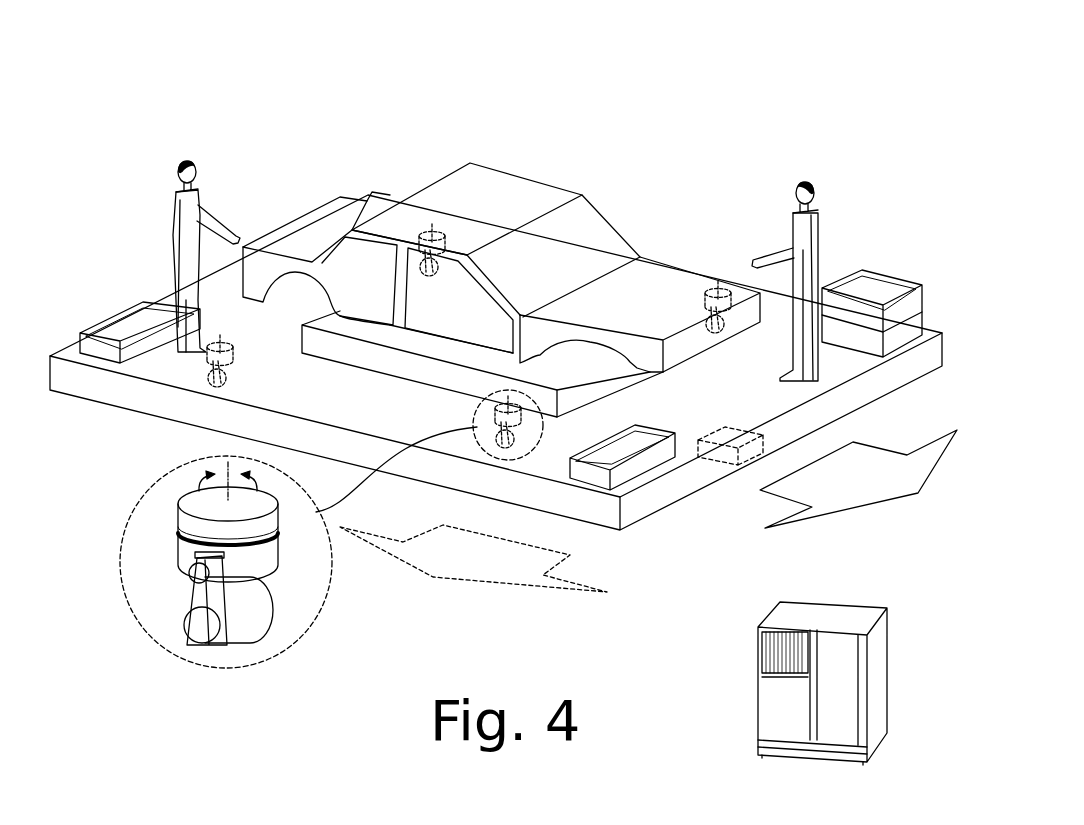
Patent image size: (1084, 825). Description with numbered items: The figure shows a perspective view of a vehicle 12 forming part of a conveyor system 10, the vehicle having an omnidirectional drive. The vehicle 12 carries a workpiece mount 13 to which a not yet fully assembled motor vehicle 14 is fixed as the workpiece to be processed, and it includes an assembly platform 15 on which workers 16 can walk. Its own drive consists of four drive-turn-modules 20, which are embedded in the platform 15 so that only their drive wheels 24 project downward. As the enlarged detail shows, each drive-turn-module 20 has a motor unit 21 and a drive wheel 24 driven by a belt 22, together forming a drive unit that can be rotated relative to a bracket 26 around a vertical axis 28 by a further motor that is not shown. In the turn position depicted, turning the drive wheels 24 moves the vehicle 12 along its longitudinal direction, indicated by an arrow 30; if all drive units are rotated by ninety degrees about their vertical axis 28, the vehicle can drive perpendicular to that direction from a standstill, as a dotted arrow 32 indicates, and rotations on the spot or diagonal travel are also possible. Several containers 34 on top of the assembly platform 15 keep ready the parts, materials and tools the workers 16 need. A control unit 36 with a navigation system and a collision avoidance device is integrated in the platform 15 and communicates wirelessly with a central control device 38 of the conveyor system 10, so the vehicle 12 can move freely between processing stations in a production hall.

The conveyor system 10 is at (761, 119).
The vehicle 12 is at (287, 181).
The workpiece mount 13 is at (340, 353).
The motor vehicle 14 is at (530, 188).
The assembly platform 15 is at (637, 503).
The workers 16 is at (182, 198).
The drive-turn-module 20 is at (391, 446).
The motor unit 21 is at (273, 542).
The belt 22 is at (173, 587).
The drive wheel 24 is at (250, 623).
The bracket 26 is at (190, 503).
The vertical axis 28 is at (222, 480).
The arrow 30 is at (840, 505).
The dotted arrow 32 is at (540, 560).
The containers 34 is at (888, 284).
The control unit 36 is at (723, 452).
The central control device 38 is at (768, 698).